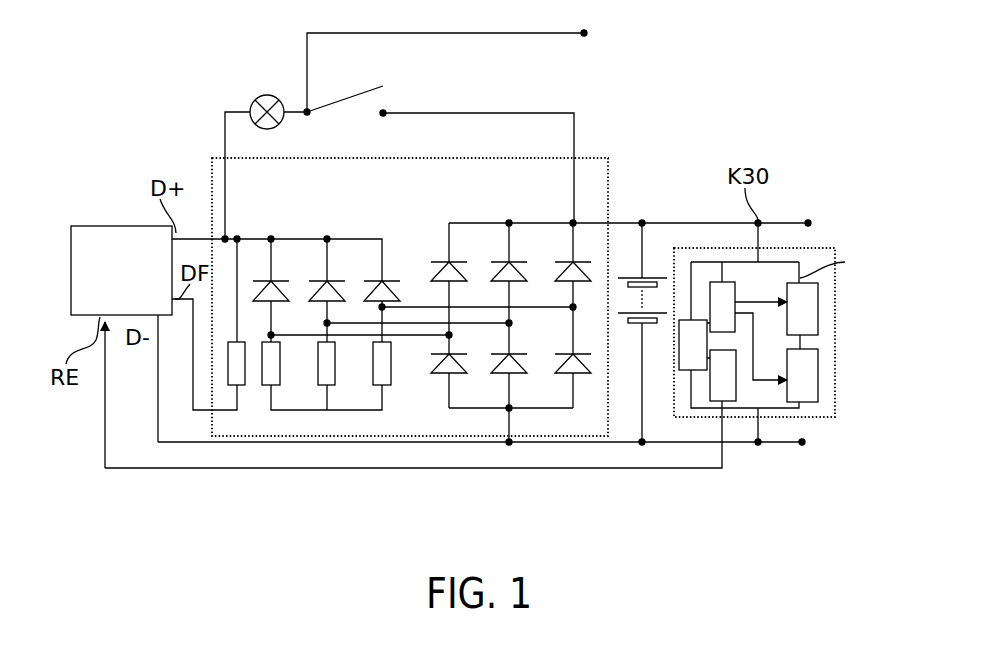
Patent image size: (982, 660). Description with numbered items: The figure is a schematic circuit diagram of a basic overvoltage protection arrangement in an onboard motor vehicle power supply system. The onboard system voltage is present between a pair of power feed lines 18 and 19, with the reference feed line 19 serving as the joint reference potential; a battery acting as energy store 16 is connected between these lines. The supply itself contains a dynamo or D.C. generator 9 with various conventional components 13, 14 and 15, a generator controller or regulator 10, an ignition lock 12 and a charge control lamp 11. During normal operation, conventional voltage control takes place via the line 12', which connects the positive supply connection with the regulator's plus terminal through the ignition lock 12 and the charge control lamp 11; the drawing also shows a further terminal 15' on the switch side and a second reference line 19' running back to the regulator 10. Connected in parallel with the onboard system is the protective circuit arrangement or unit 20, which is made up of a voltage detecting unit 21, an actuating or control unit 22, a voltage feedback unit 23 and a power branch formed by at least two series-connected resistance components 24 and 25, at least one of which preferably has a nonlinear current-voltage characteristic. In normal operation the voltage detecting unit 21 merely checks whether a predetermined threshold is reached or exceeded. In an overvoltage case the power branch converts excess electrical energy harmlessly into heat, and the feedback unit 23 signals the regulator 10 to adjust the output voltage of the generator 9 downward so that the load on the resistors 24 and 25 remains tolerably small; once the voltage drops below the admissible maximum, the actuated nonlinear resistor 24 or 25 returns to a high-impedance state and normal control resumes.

The dynamo or D.C. generator 9 is at (459, 158).
The generator controller or regulator 10 is at (121, 270).
The charge control lamp 11 is at (254, 101).
The ignition lock 12 is at (343, 83).
The line 12' is at (477, 143).
The generator component 13 is at (237, 288).
The generator component 14 is at (346, 292).
The generator component 15 is at (619, 314).
The terminal 15' is at (471, 68).
The energy store 16 is at (636, 278).
The power feed line 18 is at (809, 223).
The reference feed line 19 is at (481, 476).
The ground line 19' is at (413, 470).
The circuit arrangement or unit 20 is at (711, 248).
The voltage detecting unit 21 is at (694, 345).
The actuating or control unit 22 is at (748, 331).
The voltage feedback unit 23 is at (724, 375).
The resistance component 24 is at (803, 316).
The resistance component 25 is at (803, 375).